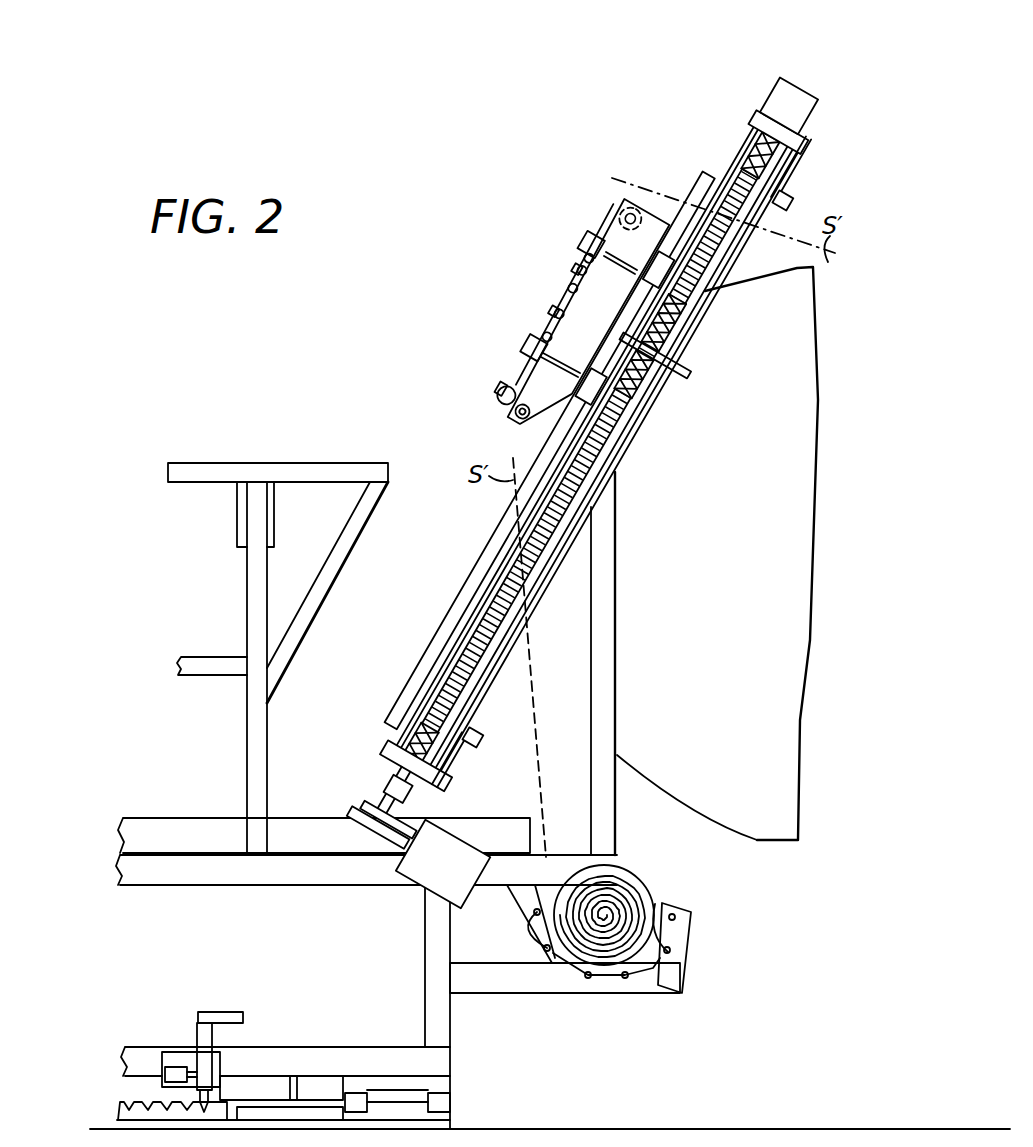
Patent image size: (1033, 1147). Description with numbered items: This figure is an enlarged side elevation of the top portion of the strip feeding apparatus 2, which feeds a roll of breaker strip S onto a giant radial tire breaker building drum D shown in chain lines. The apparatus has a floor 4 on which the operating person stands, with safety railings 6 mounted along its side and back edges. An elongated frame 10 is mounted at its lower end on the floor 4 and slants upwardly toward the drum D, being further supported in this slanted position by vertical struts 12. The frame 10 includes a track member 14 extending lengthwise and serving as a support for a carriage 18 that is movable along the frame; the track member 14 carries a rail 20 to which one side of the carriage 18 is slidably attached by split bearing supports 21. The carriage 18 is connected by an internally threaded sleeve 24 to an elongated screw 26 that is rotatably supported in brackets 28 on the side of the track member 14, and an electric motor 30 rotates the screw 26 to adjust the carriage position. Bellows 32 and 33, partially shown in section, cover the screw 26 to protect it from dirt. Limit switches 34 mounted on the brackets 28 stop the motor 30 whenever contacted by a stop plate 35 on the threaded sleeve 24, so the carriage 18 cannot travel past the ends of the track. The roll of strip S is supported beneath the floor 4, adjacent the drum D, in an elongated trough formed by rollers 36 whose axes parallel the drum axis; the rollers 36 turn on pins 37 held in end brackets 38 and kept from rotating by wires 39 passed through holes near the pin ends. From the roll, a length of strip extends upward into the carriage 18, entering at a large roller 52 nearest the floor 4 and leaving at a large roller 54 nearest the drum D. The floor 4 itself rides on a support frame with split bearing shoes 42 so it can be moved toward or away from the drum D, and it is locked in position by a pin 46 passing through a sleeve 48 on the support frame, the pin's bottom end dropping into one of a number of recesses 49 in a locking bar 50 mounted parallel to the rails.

The strip feeding apparatus 2 is at (338, 404).
The floor 4 is at (294, 852).
The safety railings 6 is at (230, 463).
The elongated frame 10 is at (697, 122).
The vertical struts 12 is at (612, 810).
The track member 14 is at (748, 212).
The carriage 18 is at (543, 262).
The rail 20 is at (693, 205).
The split bearing supports 21 is at (656, 272).
The internally threaded sleeve 24 is at (648, 400).
The elongated screw 26 is at (466, 700).
The brackets 28 is at (796, 138).
The electric motor 30 is at (462, 843).
The bellows 32 is at (672, 390).
The bellows 33 is at (752, 135).
The limit switches 34 is at (793, 198).
The stop plate 35 is at (700, 375).
The rollers 36 is at (665, 903).
The pins 37 is at (528, 913).
The end brackets 38 is at (668, 988).
The wires 39 is at (690, 938).
The split bearing shoes 42 is at (445, 1092).
The pin 46 is at (200, 1030).
The sleeve 48 is at (208, 1062).
The recesses 49 is at (150, 1100).
The locking bar 50 is at (218, 1110).
The large roller 52 is at (510, 420).
The large roller 54 is at (625, 205).
The roll of breaker strip S is at (635, 872).
The building drum D is at (758, 834).